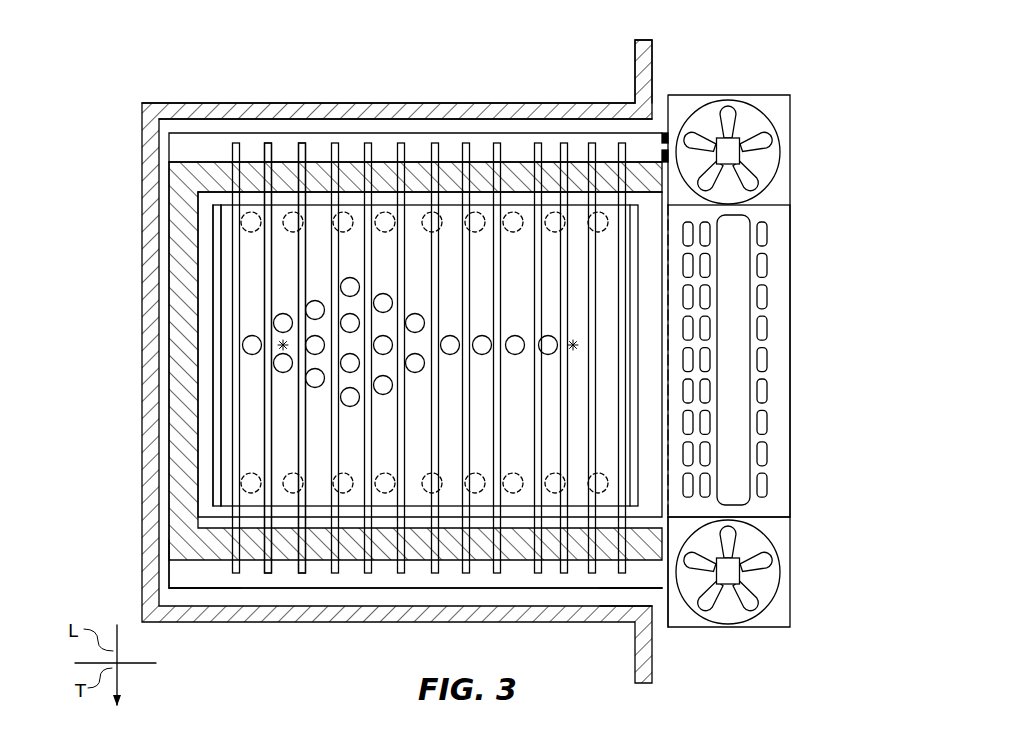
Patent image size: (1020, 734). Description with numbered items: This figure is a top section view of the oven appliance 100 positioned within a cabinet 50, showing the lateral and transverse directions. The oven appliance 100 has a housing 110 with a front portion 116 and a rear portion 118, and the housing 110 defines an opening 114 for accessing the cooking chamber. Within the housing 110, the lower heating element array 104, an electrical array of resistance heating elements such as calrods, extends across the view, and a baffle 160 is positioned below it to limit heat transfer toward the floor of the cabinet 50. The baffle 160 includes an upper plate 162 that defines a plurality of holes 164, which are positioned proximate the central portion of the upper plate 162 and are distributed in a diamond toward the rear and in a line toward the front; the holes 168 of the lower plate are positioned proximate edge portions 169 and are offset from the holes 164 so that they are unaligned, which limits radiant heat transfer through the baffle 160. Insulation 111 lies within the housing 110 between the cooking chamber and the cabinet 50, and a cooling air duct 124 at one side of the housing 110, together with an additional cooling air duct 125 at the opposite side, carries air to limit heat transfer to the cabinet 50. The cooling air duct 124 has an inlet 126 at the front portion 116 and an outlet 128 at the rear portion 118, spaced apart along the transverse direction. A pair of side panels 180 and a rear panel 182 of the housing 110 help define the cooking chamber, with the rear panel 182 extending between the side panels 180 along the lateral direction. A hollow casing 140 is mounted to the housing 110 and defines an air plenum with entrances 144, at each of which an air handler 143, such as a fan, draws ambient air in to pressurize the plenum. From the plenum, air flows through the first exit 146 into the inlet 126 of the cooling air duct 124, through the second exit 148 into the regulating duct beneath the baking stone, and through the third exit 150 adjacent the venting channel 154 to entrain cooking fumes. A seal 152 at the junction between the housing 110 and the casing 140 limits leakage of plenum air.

The cabinet 50 is at (651, 42).
The oven appliance 100 is at (172, 122).
The lower heating element array 104 is at (564, 190).
The housing 110 is at (167, 263).
The insulation 111 is at (222, 490).
The opening 114 is at (670, 507).
The front portion 116 is at (608, 130).
The rear portion 118 is at (207, 128).
The cooling air duct 124 is at (413, 592).
The additional cooling air duct 125 is at (414, 148).
The inlet 126 is at (660, 574).
The outlet 128 is at (172, 577).
The casing 140 is at (790, 365).
The air handlers 143 is at (734, 98).
The entrances 144 is at (775, 187).
The first exit 146 is at (670, 574).
The second exit 148 is at (670, 222).
The third exit 150 is at (772, 295).
The seal 152 is at (667, 137).
The venting channel 154 is at (722, 334).
The baffle 160 is at (226, 227).
The upper plate 162 is at (212, 495).
The holes 164 is at (383, 292).
The holes 168 is at (513, 210).
The edge portions 169 is at (226, 233).
The side panels 180 is at (284, 203).
The rear panel 182 is at (197, 380).